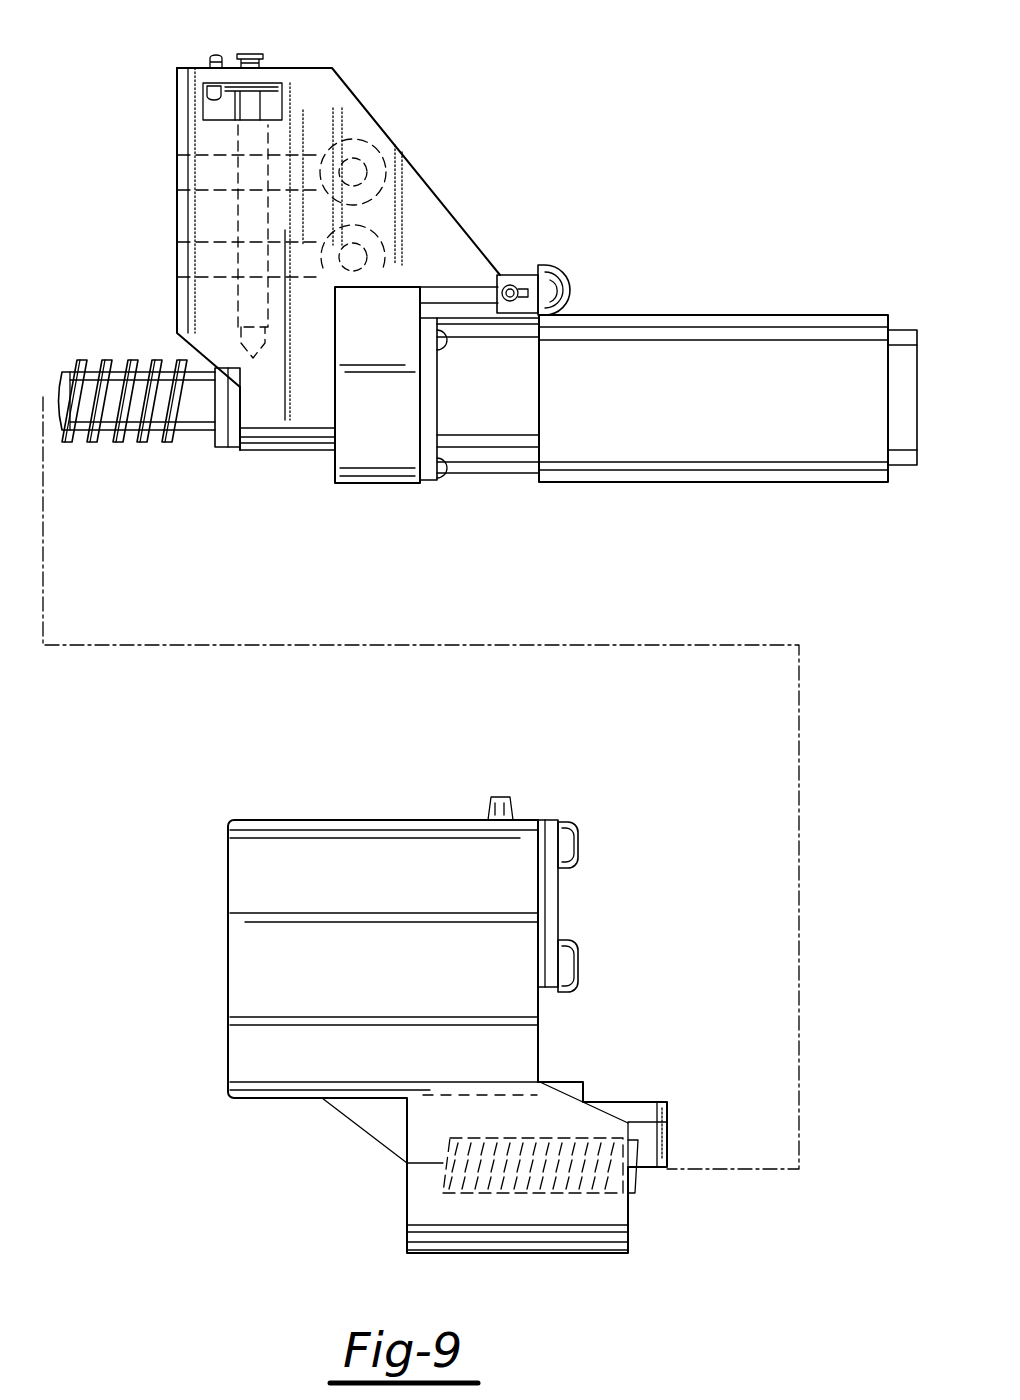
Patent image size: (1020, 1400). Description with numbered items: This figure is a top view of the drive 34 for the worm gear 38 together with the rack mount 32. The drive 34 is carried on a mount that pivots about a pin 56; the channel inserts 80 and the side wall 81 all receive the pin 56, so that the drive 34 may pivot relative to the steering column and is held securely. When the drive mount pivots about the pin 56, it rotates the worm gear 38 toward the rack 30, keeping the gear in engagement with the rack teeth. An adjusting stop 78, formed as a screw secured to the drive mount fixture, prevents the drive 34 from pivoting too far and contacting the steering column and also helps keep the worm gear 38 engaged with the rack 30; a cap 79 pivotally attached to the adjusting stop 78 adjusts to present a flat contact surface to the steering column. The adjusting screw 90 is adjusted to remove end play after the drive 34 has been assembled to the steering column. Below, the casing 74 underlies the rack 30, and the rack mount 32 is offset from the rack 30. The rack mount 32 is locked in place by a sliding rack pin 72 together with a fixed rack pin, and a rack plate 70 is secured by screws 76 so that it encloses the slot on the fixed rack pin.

The rack 30 is at (637, 1187).
The rack mount 32 is at (270, 963).
The drive 34 is at (600, 335).
The worm gear 38 is at (60, 437).
The pin 56 is at (255, 53).
The rack plate 70 is at (545, 822).
The sliding rack pin 72 is at (497, 797).
The casing 74 is at (630, 1240).
The screws 76 is at (576, 845).
The adjusting stop 78 is at (520, 285).
The cap 79 is at (562, 272).
The channel inserts 80 is at (188, 175).
The side wall 81 is at (182, 90).
The adjusting screw 90 is at (215, 56).